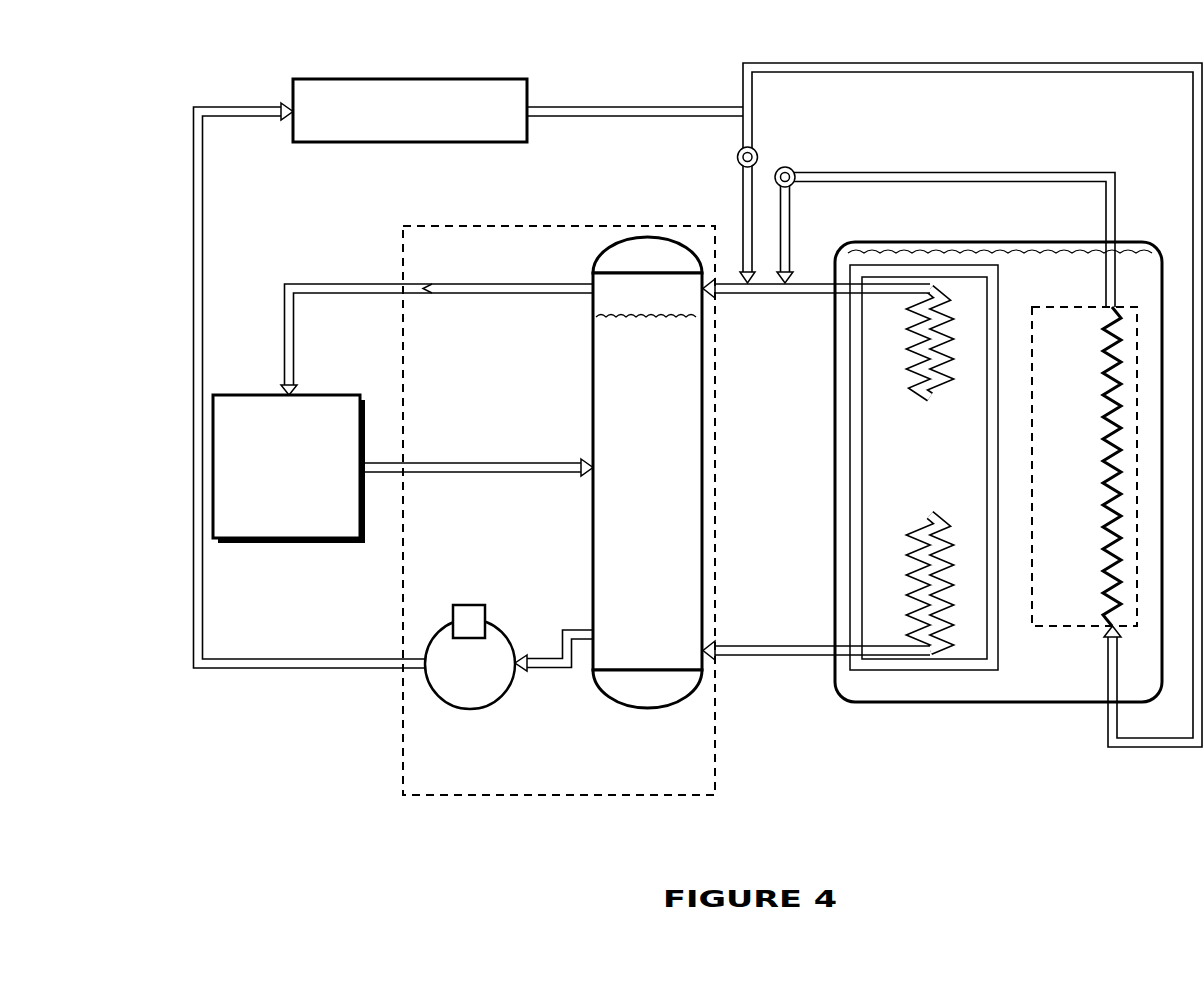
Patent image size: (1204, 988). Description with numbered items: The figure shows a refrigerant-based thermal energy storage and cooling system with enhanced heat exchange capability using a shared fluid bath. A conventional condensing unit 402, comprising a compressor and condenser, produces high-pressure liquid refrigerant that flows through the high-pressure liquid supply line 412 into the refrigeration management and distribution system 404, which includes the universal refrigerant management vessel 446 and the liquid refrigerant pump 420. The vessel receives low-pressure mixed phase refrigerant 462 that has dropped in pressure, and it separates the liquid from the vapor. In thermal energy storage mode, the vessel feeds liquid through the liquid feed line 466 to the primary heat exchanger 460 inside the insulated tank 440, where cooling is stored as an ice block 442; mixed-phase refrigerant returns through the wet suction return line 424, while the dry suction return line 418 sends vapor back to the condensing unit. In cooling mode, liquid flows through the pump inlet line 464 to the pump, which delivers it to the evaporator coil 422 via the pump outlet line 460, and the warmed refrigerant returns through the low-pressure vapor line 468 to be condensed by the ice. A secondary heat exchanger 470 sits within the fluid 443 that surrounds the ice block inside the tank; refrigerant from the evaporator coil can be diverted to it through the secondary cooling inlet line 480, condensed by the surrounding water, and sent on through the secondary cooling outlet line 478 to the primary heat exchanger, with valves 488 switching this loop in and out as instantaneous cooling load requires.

The condensing unit 402 is at (340, 539).
The refrigeration management and distribution system 404 is at (402, 693).
The high-pressure liquid supply line 412 is at (385, 463).
The dry suction return line 418 is at (313, 285).
The liquid refrigerant pump 420 is at (450, 738).
The evaporator coil 422 is at (468, 79).
The wet suction return line 424 is at (813, 297).
The insulated tank 440 is at (836, 684).
The ice block 442 is at (878, 672).
The fluid 443 is at (1137, 250).
The universal refrigerant management vessel 446 is at (671, 452).
The primary heat exchanger 460 is at (948, 507).
The low-pressure mixed phase refrigerant 462 is at (545, 463).
The pump inlet line 464 is at (571, 668).
The liquid feed line 466 is at (788, 645).
The low-pressure vapor line 468 is at (644, 117).
The secondary heat exchanger 470 is at (1072, 306).
The secondary cooling outlet line 478 is at (815, 173).
The secondary cooling inlet line 480 is at (810, 63).
The valves 488 is at (811, 198).